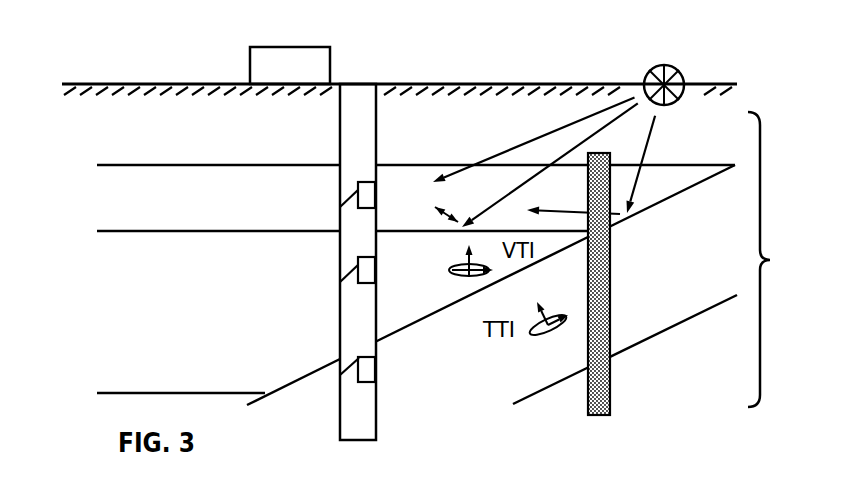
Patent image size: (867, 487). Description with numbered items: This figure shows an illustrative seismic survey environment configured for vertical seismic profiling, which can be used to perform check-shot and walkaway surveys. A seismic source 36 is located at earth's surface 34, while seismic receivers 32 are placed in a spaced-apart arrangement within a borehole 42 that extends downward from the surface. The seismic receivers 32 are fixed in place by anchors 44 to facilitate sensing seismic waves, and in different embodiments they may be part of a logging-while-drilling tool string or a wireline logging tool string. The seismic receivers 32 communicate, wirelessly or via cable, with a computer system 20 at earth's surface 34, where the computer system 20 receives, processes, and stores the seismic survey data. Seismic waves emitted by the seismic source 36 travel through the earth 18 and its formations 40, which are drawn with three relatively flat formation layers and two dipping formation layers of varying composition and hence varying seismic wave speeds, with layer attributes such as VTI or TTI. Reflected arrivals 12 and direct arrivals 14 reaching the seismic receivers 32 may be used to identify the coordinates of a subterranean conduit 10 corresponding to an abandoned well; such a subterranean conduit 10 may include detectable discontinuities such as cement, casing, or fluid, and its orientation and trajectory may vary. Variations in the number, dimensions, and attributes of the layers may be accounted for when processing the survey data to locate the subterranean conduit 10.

The subterranean conduit 10 is at (611, 298).
The reflected arrivals 12 is at (551, 212).
The direct arrivals 14 is at (497, 153).
The earth 18 is at (87, 144).
The computer system 20 is at (250, 62).
The seismic receivers 32 is at (376, 193).
The earth's surface 34 is at (72, 80).
The seismic source 36 is at (670, 66).
The formations 40 is at (774, 259).
The borehole 42 is at (377, 126).
The anchors 44 is at (340, 203).